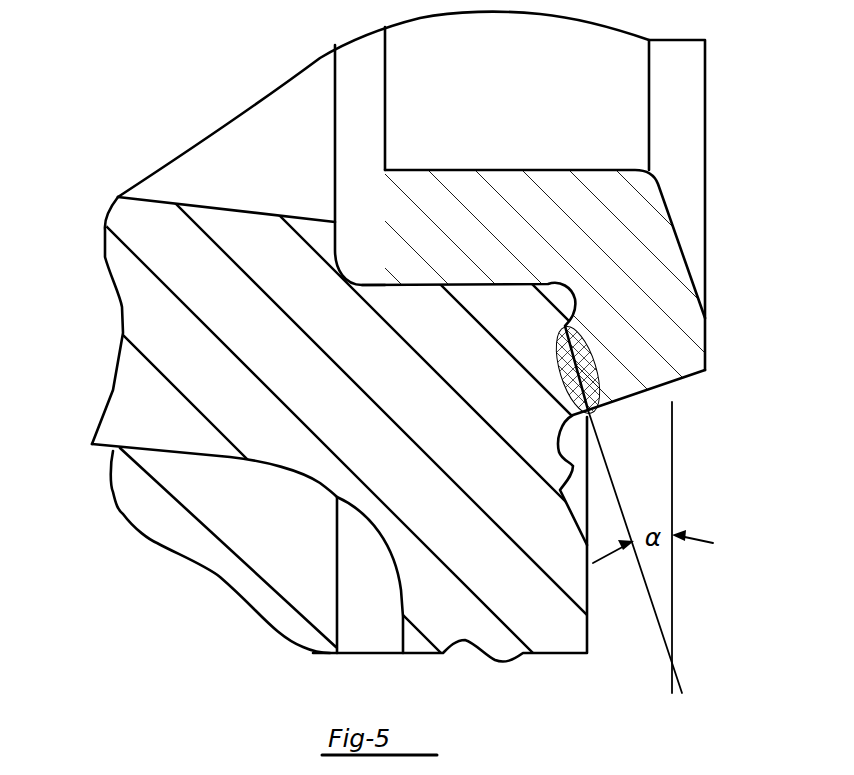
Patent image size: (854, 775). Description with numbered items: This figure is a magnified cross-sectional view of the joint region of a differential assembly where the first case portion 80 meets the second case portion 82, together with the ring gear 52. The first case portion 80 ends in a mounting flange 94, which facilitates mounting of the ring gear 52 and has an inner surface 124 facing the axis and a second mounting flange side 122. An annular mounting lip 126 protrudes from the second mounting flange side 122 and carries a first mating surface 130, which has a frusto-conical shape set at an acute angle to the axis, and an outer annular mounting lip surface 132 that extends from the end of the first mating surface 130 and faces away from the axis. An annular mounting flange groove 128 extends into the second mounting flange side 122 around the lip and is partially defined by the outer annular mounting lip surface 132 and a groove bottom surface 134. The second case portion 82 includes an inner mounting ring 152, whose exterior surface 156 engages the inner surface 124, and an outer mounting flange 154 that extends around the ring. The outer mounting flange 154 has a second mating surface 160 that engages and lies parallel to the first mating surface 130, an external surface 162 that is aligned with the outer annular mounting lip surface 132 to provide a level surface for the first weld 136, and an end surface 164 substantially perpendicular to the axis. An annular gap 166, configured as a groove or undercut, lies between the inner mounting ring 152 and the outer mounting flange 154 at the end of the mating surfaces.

The ring gear 52 is at (237, 542).
The first case portion 80 is at (122, 319).
The second case portion 82 is at (677, 225).
The mounting flange 94 is at (587, 651).
The second mounting flange side 122 is at (588, 587).
The inner surface 124 is at (440, 284).
The annular mounting lip 126 is at (589, 411).
The annular mounting flange groove 128 is at (584, 485).
The first mating surface 130 is at (595, 388).
The outer annular mounting lip surface 132 is at (596, 438).
The groove bottom surface 134 is at (575, 471).
The first weld 136 is at (575, 402).
The inner mounting ring 152 is at (527, 190).
The outer mounting flange 154 is at (635, 396).
The exterior surface 156 is at (480, 297).
The second mating surface 160 is at (572, 388).
The external surface 162 is at (668, 383).
The end surface 164 is at (705, 337).
The annular gap 166 is at (553, 298).